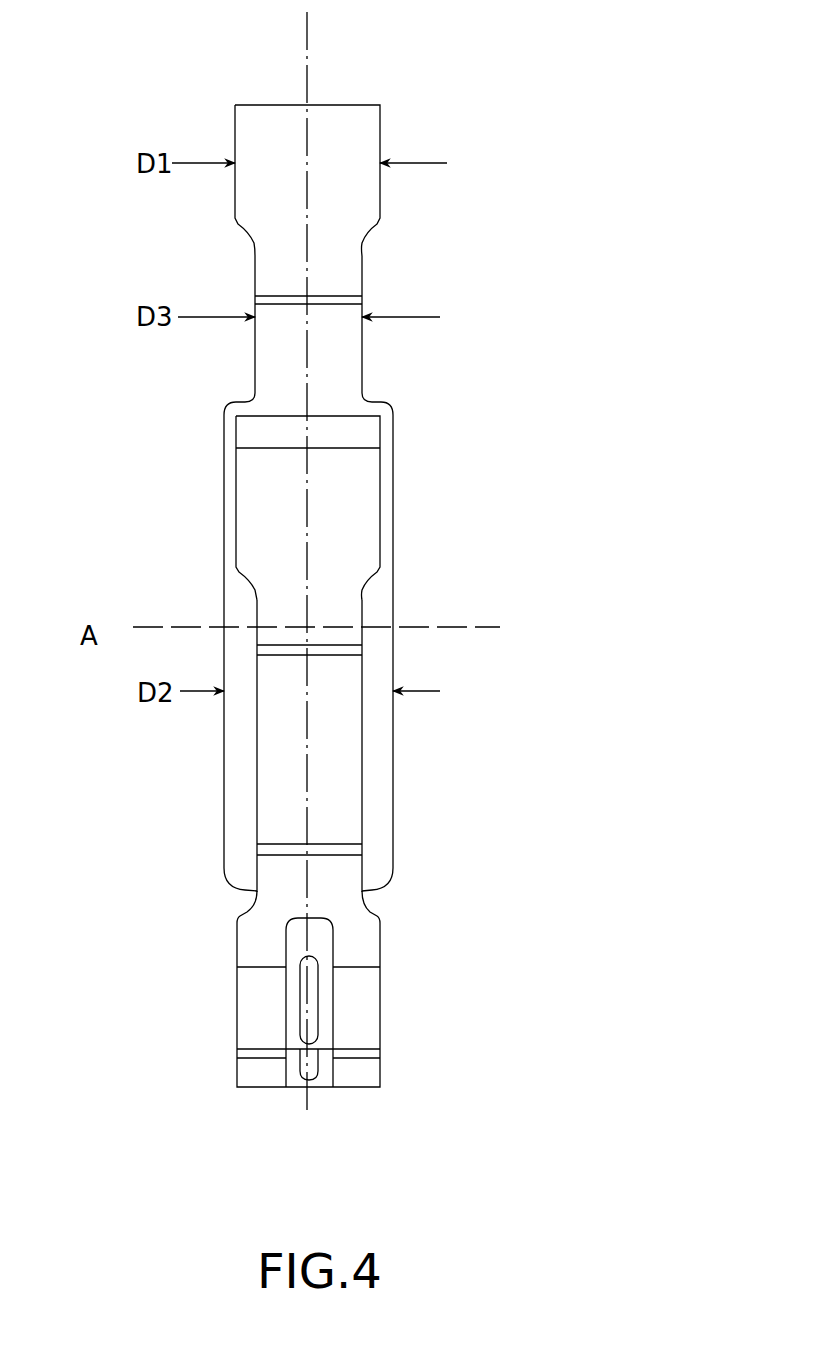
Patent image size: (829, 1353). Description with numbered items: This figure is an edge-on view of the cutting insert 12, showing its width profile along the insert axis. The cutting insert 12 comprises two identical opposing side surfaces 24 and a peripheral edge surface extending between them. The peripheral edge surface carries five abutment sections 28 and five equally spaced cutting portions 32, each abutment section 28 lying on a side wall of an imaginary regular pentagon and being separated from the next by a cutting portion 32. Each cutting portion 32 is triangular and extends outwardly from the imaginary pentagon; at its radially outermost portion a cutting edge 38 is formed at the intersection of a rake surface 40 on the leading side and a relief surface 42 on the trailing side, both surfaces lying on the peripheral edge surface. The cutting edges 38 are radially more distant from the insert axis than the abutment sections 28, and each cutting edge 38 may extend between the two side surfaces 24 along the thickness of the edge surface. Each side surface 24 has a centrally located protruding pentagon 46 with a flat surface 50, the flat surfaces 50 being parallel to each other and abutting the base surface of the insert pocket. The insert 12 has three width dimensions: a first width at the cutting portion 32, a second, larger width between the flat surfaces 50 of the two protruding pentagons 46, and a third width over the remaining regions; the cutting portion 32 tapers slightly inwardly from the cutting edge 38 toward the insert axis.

The cutting insert 12 is at (333, 72).
The side surface 24 is at (402, 560).
The abutment section 28 is at (268, 352).
The cutting portion 32 is at (386, 188).
The cutting edge 38 is at (358, 103).
The rake surface 40 is at (363, 1030).
The relief surface 42 is at (365, 433).
The protruding pentagon 46 is at (377, 870).
The flat surface 50 is at (224, 818).